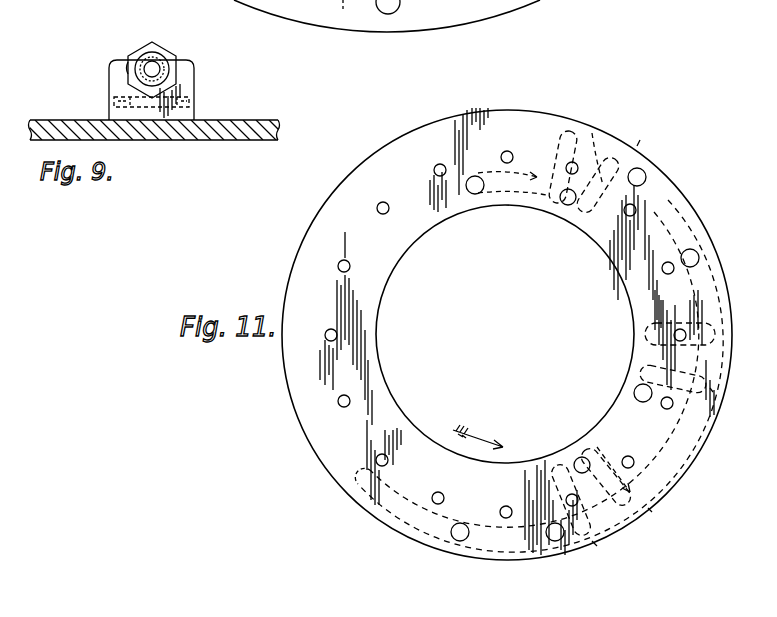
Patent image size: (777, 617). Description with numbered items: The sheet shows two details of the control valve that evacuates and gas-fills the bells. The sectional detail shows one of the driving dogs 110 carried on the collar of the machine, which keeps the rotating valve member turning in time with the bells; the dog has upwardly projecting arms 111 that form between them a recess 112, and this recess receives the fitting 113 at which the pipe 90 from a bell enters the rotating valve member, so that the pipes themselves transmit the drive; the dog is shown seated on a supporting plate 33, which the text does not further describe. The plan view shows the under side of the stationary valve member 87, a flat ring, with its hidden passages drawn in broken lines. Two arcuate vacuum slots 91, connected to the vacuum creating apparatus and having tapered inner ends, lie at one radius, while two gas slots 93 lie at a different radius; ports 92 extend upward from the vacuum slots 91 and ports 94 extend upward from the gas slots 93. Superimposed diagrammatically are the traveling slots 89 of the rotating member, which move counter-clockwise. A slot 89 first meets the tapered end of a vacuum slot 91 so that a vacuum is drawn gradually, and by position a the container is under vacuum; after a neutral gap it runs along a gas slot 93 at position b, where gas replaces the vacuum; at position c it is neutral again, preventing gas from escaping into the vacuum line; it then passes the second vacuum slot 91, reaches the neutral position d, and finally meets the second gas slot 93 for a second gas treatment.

In FIG. 9, the mounting plate 33 is at (225, 128).
In FIG. 9, the pipe 90 is at (147, 56).
In FIG. 9, the driving dog 110 is at (195, 109).
In FIG. 9, the upwardly projecting arm 111 is at (192, 73).
In FIG. 9, the recess 112 is at (128, 73).
In FIG. 9, the fitting 113 is at (167, 53).
In FIG. 11, the fixed valve member 87 is at (376, 322).
In FIG. 11, the radially elongated slot 89 is at (592, 134).
In FIG. 11, the vacuum slot 91 is at (670, 203).
In FIG. 11, the port 92 is at (639, 176).
In FIG. 11, the gas slot 93 is at (516, 170).
In FIG. 11, the port 94 is at (478, 195).
In FIG. 11, the vacuum position a is at (597, 546).
In FIG. 11, the gas supply position b is at (652, 512).
In FIG. 11, the neutral position c is at (712, 391).
In FIG. 11, the neutral position d is at (642, 134).